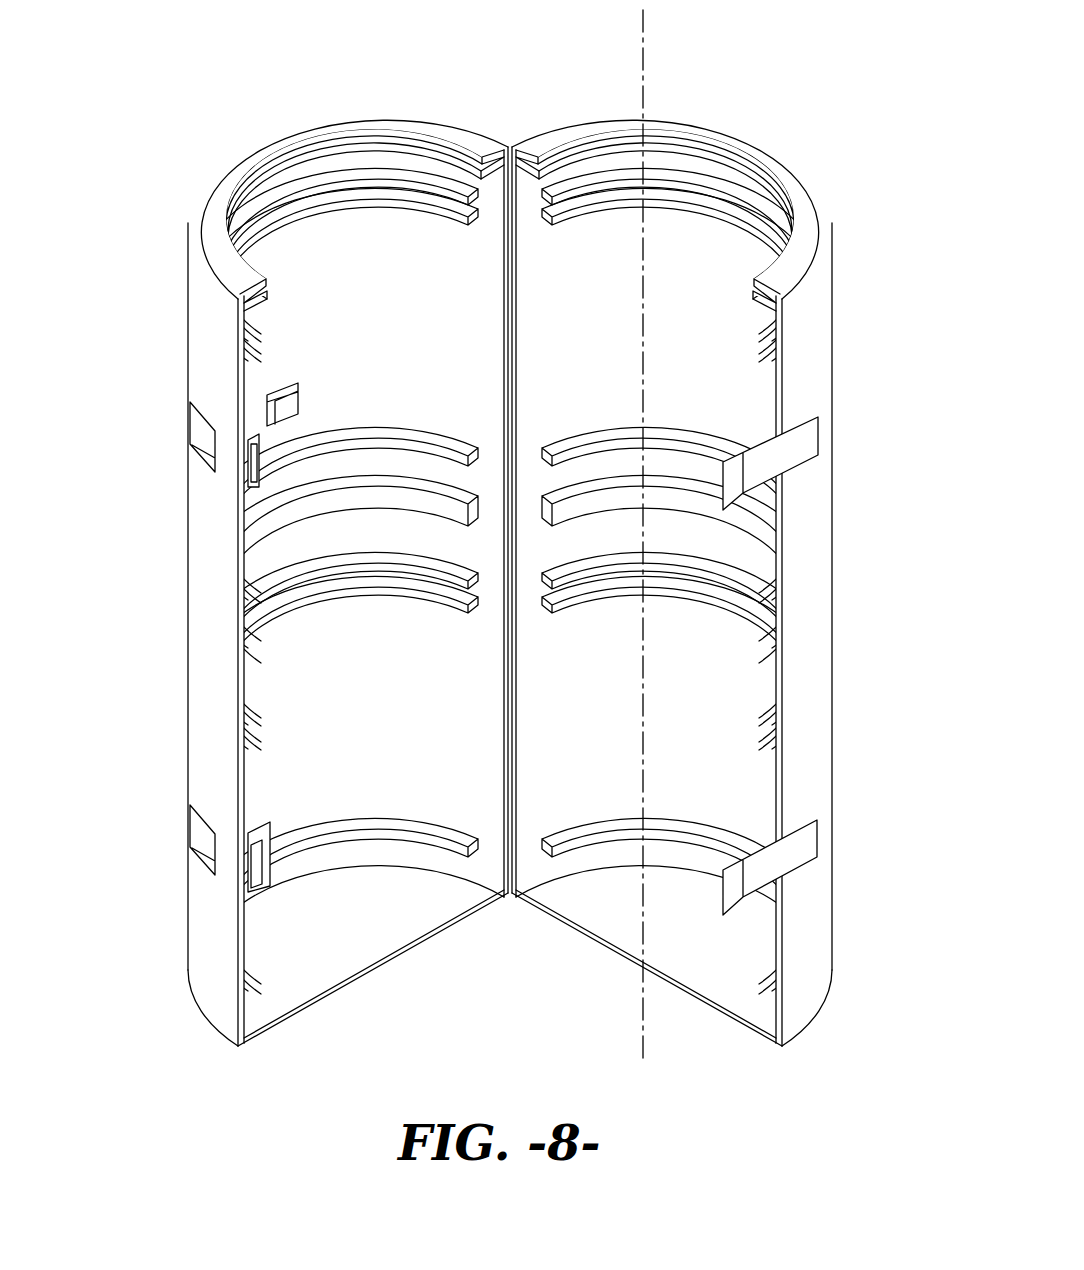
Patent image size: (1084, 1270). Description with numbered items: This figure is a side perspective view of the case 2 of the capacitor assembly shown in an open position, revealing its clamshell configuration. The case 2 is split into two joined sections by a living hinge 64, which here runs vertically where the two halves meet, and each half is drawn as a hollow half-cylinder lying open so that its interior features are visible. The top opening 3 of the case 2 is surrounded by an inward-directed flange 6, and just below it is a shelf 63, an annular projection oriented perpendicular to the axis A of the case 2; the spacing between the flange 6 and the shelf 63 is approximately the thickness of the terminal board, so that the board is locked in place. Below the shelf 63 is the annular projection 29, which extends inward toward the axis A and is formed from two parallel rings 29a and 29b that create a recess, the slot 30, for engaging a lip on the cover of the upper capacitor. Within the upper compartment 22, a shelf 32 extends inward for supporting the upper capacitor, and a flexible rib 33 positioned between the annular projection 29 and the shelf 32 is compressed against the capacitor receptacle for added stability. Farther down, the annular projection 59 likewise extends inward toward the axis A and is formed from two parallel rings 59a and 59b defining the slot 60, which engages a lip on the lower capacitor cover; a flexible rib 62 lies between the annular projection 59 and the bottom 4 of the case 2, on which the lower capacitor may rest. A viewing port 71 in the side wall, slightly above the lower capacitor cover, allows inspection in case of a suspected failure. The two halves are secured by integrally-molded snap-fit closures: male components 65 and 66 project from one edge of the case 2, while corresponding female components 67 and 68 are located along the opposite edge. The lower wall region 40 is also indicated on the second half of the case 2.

The case 2 is at (797, 80).
The axis A is at (645, 68).
The top opening 3 is at (412, 162).
The bottom 4 is at (322, 962).
The flange 6 is at (247, 152).
The upper compartment 22 is at (747, 382).
The annular projection 29 is at (340, 215).
The ring 29a is at (323, 180).
The ring 29b is at (377, 212).
The slot 30 is at (750, 283).
The shelf 32 is at (263, 513).
The flexible rib 33 is at (387, 438).
The housing wall 40 is at (738, 740).
The annular projection 59 is at (340, 632).
The ring 59a is at (341, 560).
The ring 59b is at (369, 598).
The slot 60 is at (581, 587).
The flexible rib 62 is at (380, 826).
The shelf 63 is at (270, 288).
The living hinge 64 is at (511, 900).
The male component 65 is at (733, 493).
The male component 66 is at (735, 900).
The female component 67 is at (251, 465).
The female component 68 is at (252, 864).
The viewing port 71 is at (286, 400).